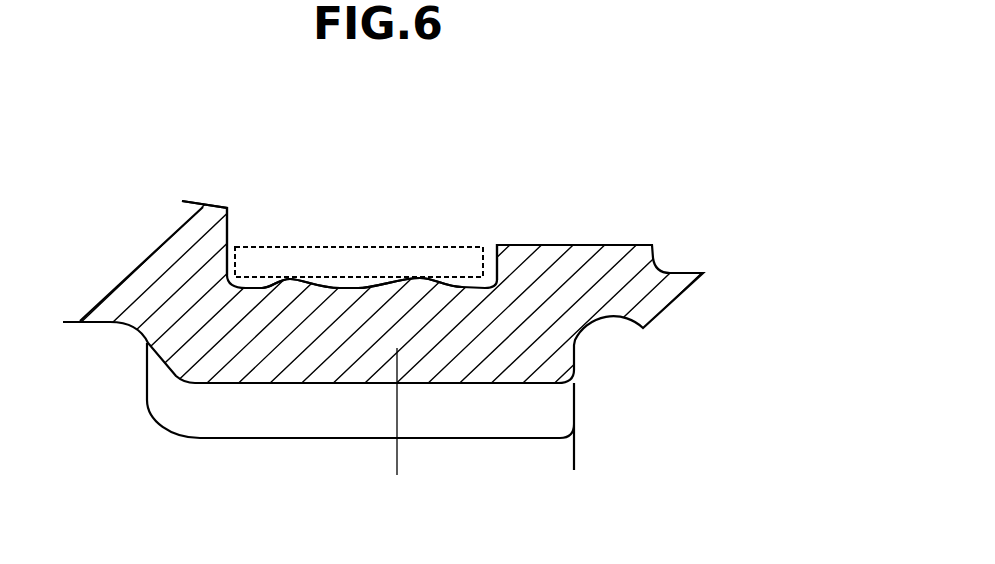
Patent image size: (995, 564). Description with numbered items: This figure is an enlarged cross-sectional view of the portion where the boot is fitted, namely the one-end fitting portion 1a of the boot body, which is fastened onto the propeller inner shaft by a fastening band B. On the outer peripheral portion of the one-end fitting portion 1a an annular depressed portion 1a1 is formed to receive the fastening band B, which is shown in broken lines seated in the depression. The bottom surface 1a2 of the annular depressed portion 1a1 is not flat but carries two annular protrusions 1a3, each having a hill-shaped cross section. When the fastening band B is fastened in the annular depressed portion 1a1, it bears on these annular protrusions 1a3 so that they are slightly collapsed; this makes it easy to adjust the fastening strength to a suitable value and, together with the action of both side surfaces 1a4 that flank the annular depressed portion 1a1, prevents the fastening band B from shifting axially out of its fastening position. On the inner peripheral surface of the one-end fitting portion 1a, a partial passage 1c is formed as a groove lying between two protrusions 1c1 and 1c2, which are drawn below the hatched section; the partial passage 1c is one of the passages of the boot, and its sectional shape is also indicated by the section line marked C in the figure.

The one-end fitting portion 1a is at (390, 198).
The annular depressed portion 1a1 is at (321, 210).
The bottom surface 1a2 is at (358, 288).
The annular protrusions 1a3 is at (433, 278).
The side surfaces 1a4 is at (230, 272).
The partial passage 1c is at (478, 396).
The protrusion 1c1 is at (360, 430).
The protrusion 1c2 is at (360, 430).
The fastening band B is at (371, 268).
The section line C- C is at (400, 355).